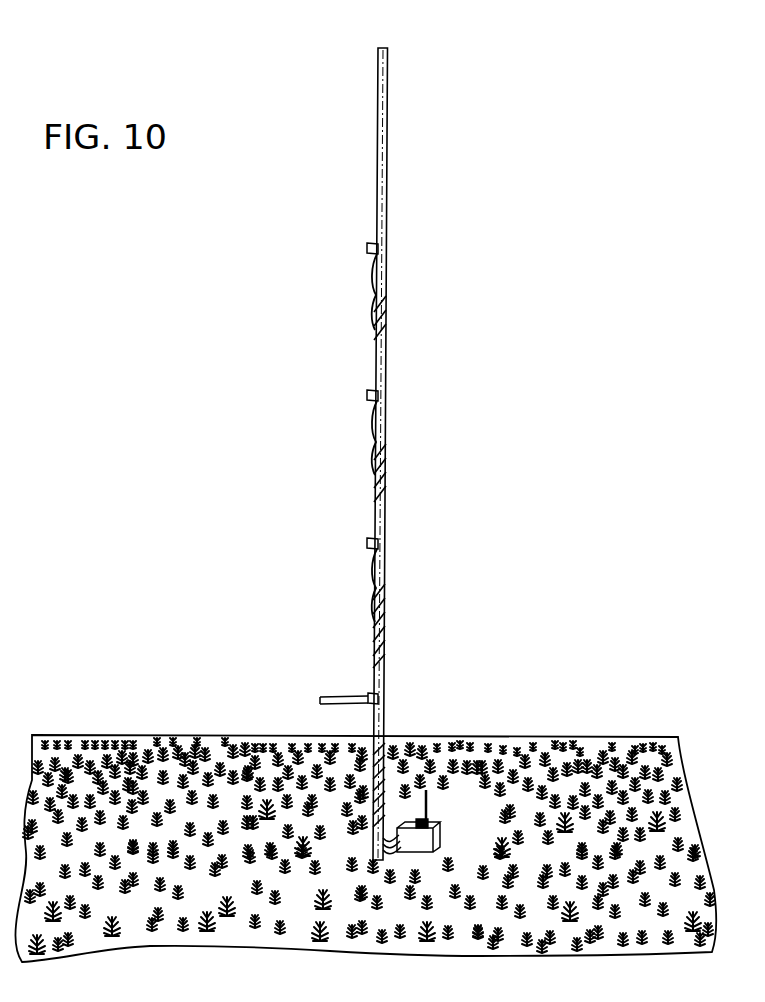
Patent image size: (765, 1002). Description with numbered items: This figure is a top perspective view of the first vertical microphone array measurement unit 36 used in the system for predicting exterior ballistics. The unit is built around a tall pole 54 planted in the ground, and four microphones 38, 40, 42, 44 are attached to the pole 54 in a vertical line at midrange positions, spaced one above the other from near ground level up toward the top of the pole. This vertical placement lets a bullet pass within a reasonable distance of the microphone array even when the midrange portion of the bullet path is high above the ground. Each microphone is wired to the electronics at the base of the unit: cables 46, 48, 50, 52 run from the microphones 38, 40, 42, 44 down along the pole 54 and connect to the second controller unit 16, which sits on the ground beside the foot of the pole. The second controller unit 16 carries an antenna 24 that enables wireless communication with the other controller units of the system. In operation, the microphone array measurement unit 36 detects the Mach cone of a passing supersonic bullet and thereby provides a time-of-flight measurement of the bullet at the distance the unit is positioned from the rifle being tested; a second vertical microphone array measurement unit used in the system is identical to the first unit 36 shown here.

The first vertical microphone array measurement unit 36 is at (393, 40).
The pole 54 is at (387, 103).
The microphone 44 is at (366, 246).
The cable 52 is at (376, 265).
The microphone 42 is at (366, 393).
The cable 50 is at (376, 403).
The microphone 40 is at (366, 541).
The cable 48 is at (376, 552).
The microphone 38 is at (370, 693).
The cable 46 is at (373, 711).
The second controller unit 16 is at (434, 838).
The antenna 24 is at (429, 800).